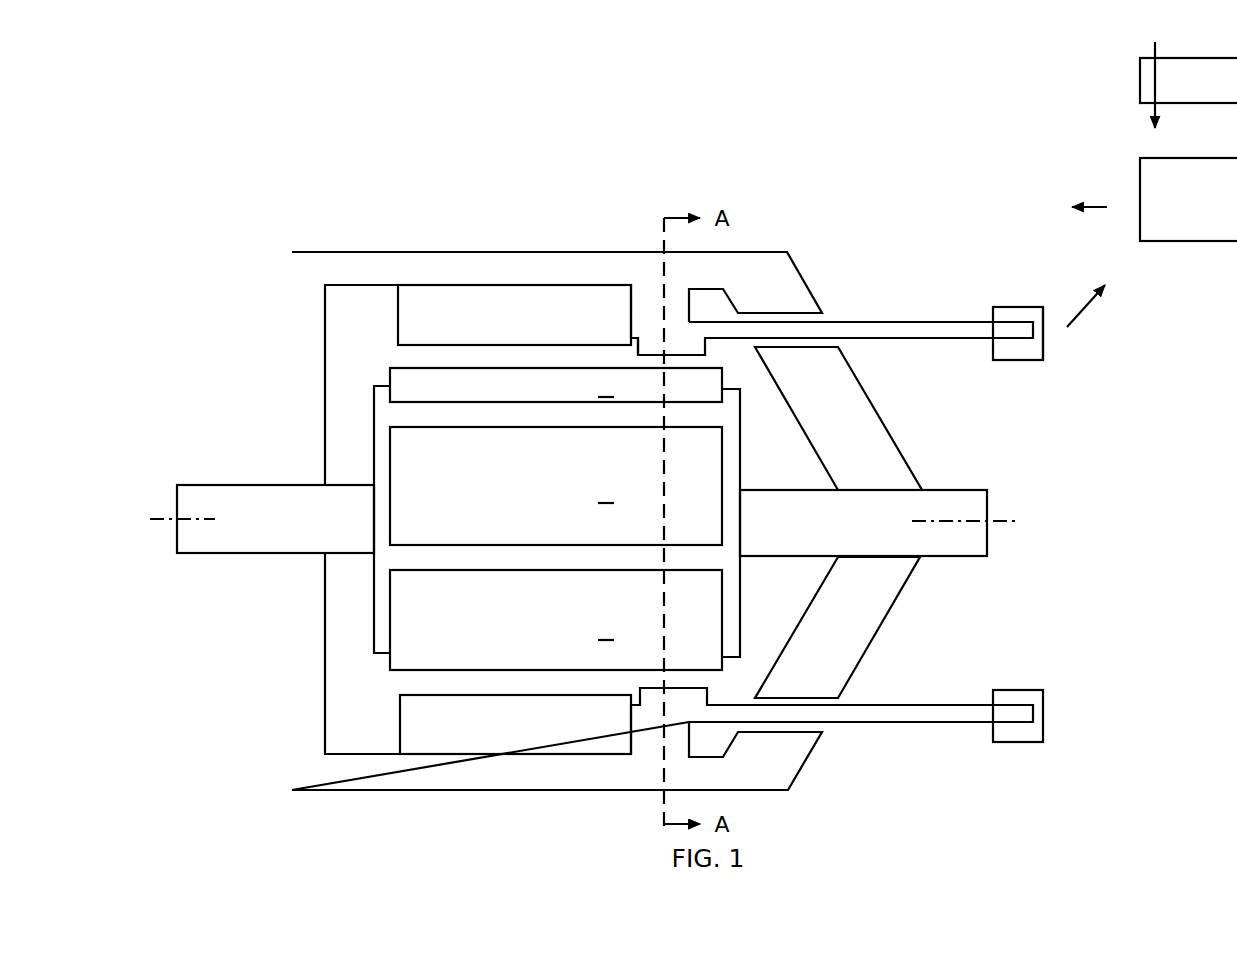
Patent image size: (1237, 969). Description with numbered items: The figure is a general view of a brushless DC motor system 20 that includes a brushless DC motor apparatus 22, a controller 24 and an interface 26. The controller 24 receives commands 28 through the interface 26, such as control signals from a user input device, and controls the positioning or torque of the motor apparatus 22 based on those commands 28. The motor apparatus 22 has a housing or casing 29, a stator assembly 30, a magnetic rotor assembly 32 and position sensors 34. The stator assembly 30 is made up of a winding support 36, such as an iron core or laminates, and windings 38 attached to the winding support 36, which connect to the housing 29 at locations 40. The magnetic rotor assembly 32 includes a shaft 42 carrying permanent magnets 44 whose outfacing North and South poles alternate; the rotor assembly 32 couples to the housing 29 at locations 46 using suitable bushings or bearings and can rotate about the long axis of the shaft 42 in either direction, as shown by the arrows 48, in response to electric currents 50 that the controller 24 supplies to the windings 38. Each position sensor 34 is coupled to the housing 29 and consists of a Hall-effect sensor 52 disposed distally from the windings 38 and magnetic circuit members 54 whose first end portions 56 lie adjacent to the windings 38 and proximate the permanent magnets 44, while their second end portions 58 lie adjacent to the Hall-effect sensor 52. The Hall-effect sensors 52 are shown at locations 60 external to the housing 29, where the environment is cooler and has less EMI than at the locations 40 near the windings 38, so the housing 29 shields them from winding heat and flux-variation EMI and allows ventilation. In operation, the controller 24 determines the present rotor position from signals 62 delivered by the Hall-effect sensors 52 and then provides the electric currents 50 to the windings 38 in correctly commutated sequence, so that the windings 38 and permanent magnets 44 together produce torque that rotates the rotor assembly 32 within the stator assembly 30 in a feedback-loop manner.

The brushless DC motor system 20 is at (256, 96).
The brushless DC motor apparatus 22 is at (865, 178).
The controller 24 is at (1185, 212).
The interface 26 is at (1185, 95).
The commands 28 is at (1153, 73).
The housing 29 is at (373, 250).
The stator assembly 30 is at (619, 254).
The magnetic rotor assembly 32 is at (758, 467).
The position sensors 34 is at (970, 245).
The winding support 36 is at (474, 324).
The windings 38 is at (515, 724).
The locations 40 is at (534, 283).
The shaft 42 is at (235, 537).
The permanent magnets 44 is at (538, 496).
The locations 46 is at (282, 563).
The arrows 48 is at (275, 507).
The electric currents 50 is at (1090, 210).
The Hall-effect sensor 52 is at (1018, 309).
The magnetic circuit members 54 is at (926, 320).
The first end portions 56 is at (641, 337).
The second end portions 58 is at (1005, 357).
The locations 60 is at (1041, 402).
The signals 62 is at (1083, 310).